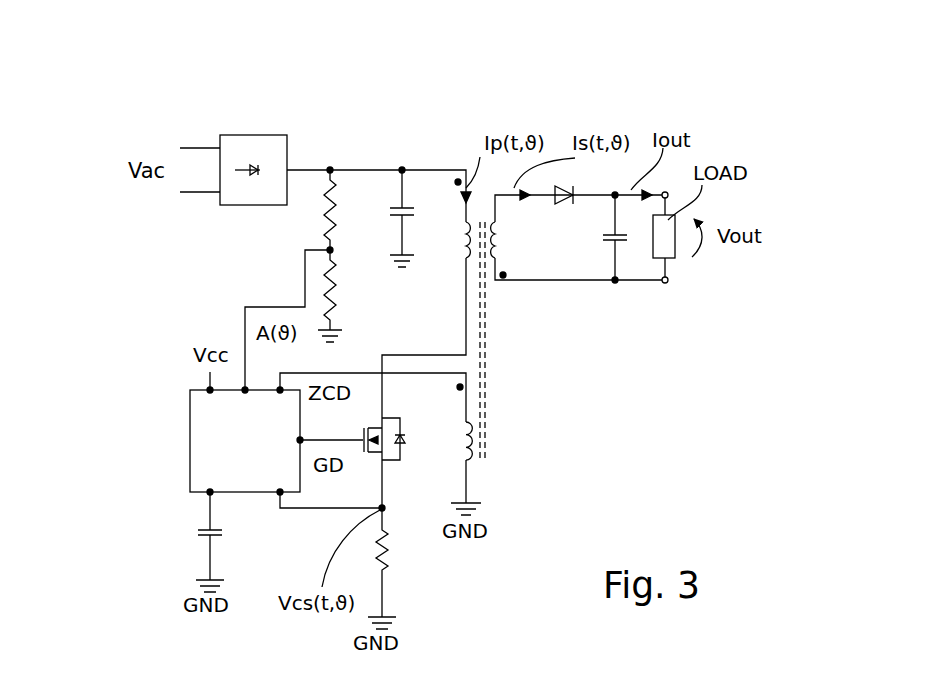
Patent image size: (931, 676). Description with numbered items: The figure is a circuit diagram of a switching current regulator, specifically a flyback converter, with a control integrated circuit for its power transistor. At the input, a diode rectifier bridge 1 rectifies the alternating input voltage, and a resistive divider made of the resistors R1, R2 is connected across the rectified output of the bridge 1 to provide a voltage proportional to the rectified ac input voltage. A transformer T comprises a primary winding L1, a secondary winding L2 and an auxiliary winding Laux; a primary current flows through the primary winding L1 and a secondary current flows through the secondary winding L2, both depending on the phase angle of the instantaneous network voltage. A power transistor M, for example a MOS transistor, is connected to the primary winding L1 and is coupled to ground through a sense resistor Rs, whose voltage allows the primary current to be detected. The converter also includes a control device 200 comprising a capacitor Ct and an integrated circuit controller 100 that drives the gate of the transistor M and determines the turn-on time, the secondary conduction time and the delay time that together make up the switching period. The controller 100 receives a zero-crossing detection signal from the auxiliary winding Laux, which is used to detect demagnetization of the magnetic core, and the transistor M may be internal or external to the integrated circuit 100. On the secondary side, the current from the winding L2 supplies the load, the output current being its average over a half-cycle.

The diode rectifier bridge 1 is at (282, 148).
The integrated circuit controller 100 is at (190, 413).
The control device 200 is at (175, 379).
The transformer T is at (464, 158).
The power transistor M is at (396, 422).
The resistor R1 is at (348, 210).
The resistor R2 is at (345, 296).
The primary winding L1 is at (445, 236).
The secondary winding L2 is at (520, 236).
The auxiliary winding Laux is at (432, 460).
The capacitor Ct is at (225, 542).
The sense resistor Rs is at (369, 568).